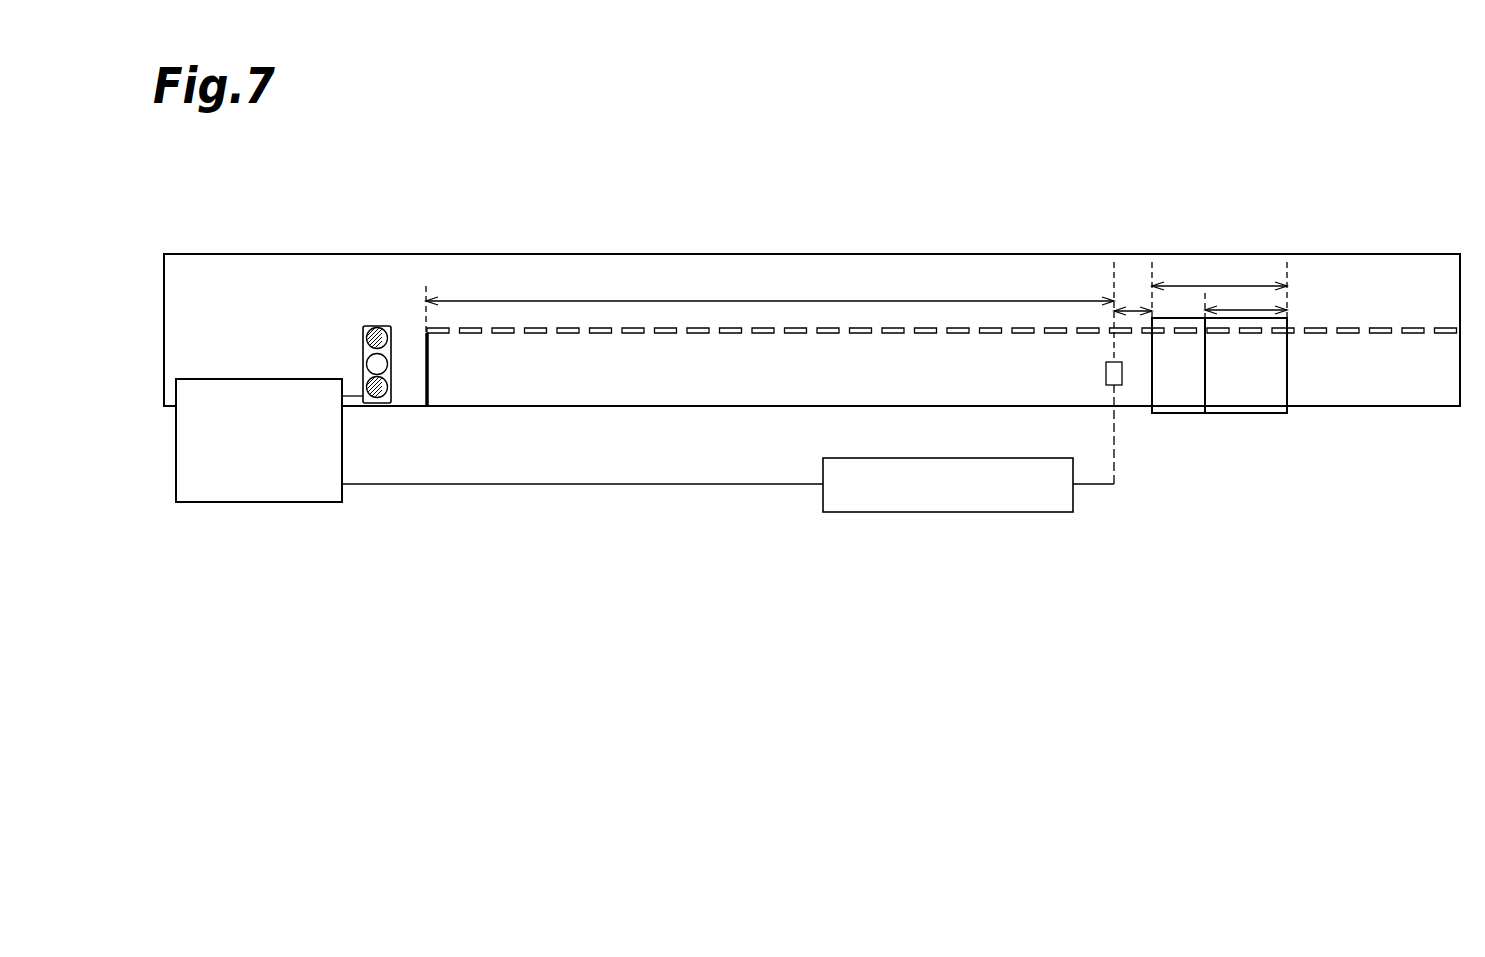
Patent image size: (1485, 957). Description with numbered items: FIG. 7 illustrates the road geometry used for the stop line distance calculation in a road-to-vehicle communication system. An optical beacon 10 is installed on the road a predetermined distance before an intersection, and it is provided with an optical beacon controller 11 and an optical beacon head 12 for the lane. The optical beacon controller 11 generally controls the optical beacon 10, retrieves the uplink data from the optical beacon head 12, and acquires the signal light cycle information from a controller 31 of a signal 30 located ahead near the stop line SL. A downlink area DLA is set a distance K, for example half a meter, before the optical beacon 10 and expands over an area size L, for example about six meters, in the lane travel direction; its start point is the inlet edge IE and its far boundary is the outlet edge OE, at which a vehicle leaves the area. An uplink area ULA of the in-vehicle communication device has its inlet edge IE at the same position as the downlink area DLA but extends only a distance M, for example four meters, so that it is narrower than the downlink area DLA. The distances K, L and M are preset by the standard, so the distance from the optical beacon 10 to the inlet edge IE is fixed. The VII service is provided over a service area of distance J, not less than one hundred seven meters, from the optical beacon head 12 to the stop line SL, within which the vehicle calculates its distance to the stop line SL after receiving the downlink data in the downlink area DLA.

The optical beacon 10 is at (1115, 272).
The optical beacon controller 11 is at (1027, 512).
The optical beacon head 12 is at (1106, 372).
The signal 30 is at (377, 403).
The controller 31 is at (303, 502).
The stop line SL is at (428, 387).
The outlet edge OE is at (1152, 363).
The inlet edge IE is at (1287, 368).
The downlink area DLA is at (1178, 413).
The uplink area ULA is at (1242, 413).
The service area distance J is at (770, 302).
The distance before optical beacon K is at (1133, 300).
The downlink area size L is at (1219, 290).
The uplink area size M is at (1246, 302).